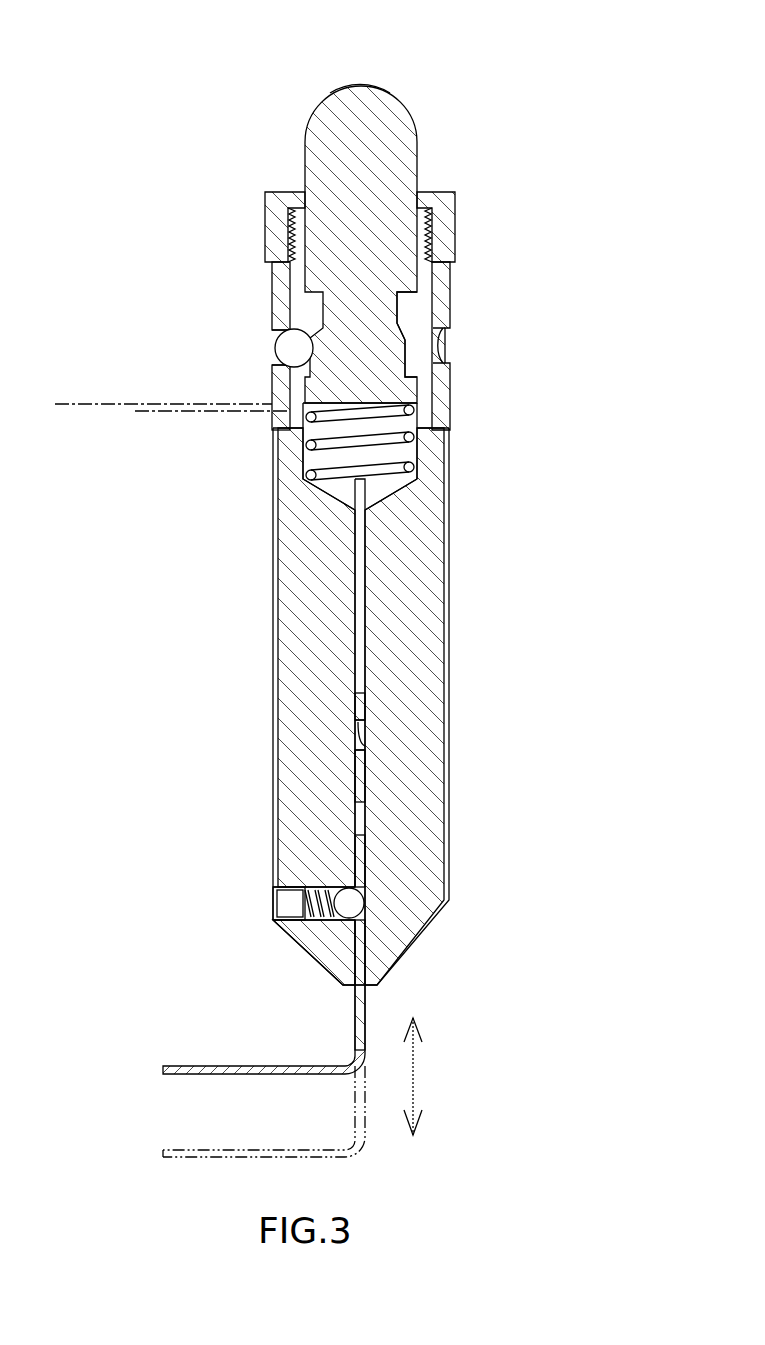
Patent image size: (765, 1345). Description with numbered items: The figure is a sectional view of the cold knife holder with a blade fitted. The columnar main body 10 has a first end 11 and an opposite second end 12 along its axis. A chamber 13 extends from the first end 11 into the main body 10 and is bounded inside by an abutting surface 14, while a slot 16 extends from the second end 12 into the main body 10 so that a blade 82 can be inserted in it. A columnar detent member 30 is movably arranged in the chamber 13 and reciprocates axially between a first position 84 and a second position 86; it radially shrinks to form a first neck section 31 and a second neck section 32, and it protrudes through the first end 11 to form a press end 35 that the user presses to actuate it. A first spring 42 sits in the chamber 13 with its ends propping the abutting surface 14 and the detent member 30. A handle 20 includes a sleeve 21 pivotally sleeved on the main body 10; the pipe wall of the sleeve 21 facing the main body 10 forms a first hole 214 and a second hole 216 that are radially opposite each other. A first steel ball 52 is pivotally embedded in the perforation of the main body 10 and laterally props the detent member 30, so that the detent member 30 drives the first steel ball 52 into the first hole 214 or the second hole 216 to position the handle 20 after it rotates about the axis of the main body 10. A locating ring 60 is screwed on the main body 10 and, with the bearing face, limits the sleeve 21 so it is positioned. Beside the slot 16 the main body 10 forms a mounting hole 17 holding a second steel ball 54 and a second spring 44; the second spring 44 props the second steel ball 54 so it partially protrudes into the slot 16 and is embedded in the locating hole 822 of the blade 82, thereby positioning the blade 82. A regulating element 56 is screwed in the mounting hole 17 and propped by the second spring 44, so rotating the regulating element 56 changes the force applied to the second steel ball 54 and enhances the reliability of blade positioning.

The main body 10 is at (273, 685).
The first end 11 is at (297, 205).
The second end 12 is at (348, 990).
The chamber 13 is at (315, 460).
The abutting surface 14 is at (378, 486).
The slot 16 is at (362, 663).
The mounting hole 17 is at (290, 890).
The handle 20 is at (259, 313).
The sleeve 21 is at (272, 285).
The detent member 30 is at (417, 145).
The first neck section 31 is at (405, 365).
The second neck section 32 is at (400, 300).
The press end 35 is at (360, 86).
The first spring 42 is at (418, 468).
The second spring 44 is at (323, 917).
The first steel ball 52 is at (278, 358).
The second steel ball 54 is at (363, 895).
The regulating element 56 is at (273, 912).
The locating ring 60 is at (455, 228).
The blade 82 is at (200, 1075).
The first position 84 is at (81, 404).
The second position 86 is at (177, 411).
The first hole 214 is at (277, 340).
The second hole 216 is at (448, 345).
The locating hole 822 is at (365, 745).